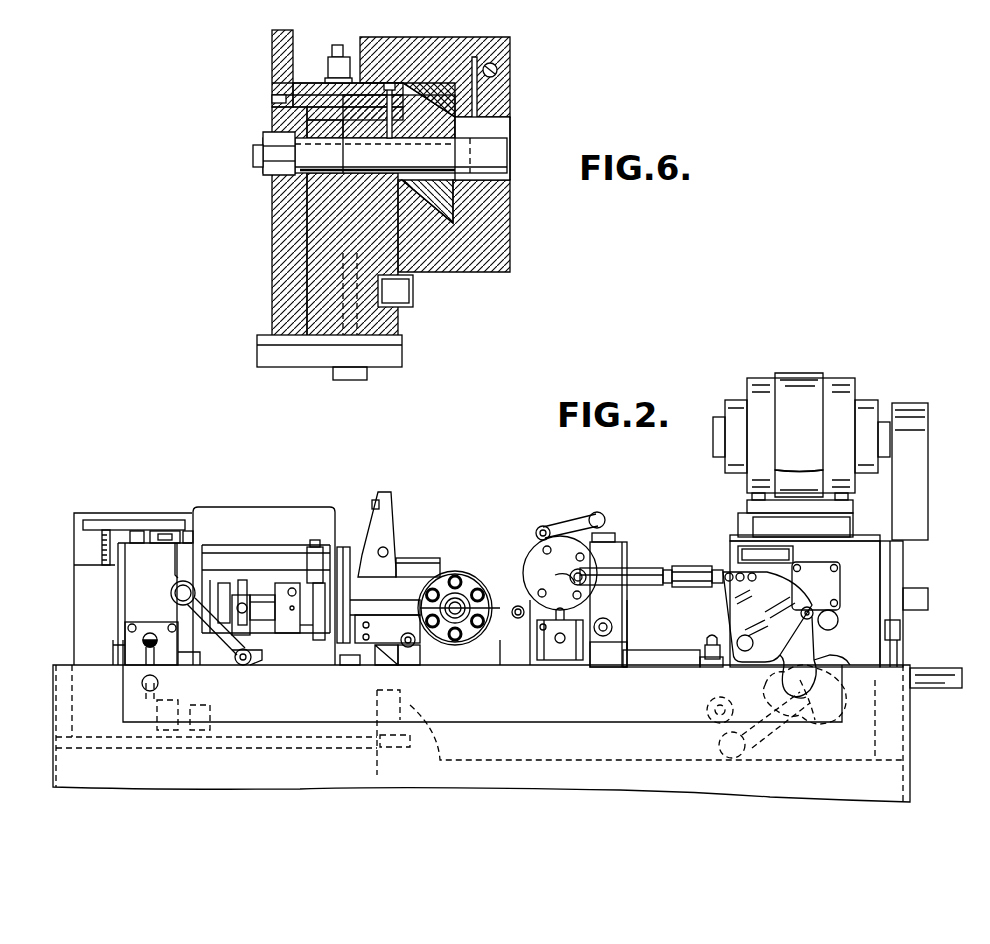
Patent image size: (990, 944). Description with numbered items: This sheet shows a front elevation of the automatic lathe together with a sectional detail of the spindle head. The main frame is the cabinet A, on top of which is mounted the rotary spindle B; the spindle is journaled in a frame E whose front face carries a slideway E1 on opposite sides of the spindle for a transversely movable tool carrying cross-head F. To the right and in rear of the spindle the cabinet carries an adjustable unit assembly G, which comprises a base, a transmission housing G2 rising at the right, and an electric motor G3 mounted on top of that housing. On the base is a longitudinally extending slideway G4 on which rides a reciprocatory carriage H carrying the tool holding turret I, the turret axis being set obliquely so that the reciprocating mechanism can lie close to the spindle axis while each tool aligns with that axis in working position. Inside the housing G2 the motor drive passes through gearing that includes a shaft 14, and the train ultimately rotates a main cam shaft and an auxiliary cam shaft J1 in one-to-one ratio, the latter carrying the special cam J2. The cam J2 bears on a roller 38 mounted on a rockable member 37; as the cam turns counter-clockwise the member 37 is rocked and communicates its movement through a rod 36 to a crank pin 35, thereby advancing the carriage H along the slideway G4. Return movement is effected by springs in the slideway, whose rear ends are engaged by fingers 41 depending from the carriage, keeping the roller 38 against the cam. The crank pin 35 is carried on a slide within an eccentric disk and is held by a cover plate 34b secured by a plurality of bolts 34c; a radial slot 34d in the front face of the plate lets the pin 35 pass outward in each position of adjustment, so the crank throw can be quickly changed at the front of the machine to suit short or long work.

In FIG. 6, the frame E is at (274, 285).
In FIG. 6, the slideway E1 is at (455, 203).
In FIG. 2, the slideway E1 is at (391, 723).
In FIG. 6, the tool carrying cross-head F is at (488, 272).
In FIG. 2, the tool carrying cross-head F is at (442, 722).
In FIG. 2, the cabinet A is at (58, 690).
In FIG. 2, the rotary spindle B is at (285, 590).
In FIG. 2, the tool holding turret I is at (462, 582).
In FIG. 2, the shaft 14 is at (414, 612).
In FIG. 2, the cover plate 34b is at (536, 556).
In FIG. 2, the bolts 34c is at (568, 526).
In FIG. 2, the radial slot 34d is at (560, 625).
In FIG. 2, the crank pin 35 is at (560, 573).
In FIG. 2, the rod 36 is at (654, 586).
In FIG. 2, the rockable member 37 is at (733, 605).
In FIG. 2, the roller 38 is at (812, 607).
In FIG. 2, the fingers 41 is at (627, 631).
In FIG. 2, the assembly G is at (905, 639).
In FIG. 2, the transmission housing G2 is at (905, 546).
In FIG. 2, the electric motor G3 is at (805, 375).
In FIG. 2, the slideway G4 is at (681, 660).
In FIG. 2, the reciprocatory carriage H is at (612, 556).
In FIG. 2, the auxiliary cam shaft J1 is at (810, 718).
In FIG. 2, the special cam J2 is at (812, 650).